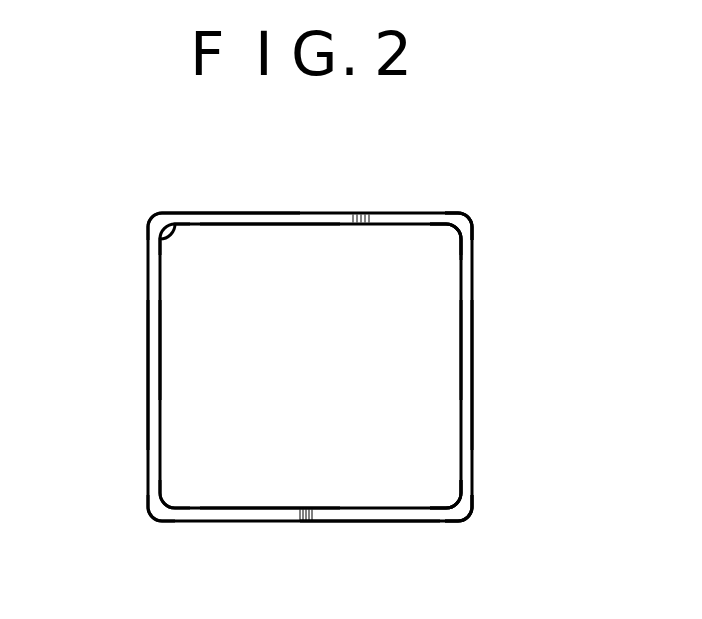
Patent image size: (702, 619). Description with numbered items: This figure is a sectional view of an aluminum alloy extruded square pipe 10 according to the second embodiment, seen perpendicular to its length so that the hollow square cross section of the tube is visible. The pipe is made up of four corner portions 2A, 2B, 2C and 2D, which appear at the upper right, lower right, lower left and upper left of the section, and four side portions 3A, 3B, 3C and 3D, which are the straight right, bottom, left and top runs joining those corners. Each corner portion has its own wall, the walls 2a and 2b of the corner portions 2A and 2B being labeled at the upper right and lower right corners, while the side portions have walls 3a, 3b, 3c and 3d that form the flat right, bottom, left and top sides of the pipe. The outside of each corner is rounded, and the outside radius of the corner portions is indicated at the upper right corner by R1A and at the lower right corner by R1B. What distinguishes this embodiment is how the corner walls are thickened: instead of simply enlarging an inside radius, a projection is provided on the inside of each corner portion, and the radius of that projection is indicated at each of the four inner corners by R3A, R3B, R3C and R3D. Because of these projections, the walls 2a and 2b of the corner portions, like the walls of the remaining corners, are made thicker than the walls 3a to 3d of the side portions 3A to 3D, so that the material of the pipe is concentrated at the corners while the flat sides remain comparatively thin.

The square pipe 10 is at (397, 162).
The corner portion 2A is at (491, 214).
The corner portion 2B is at (475, 533).
The corner portion 2C is at (150, 534).
The corner portion 2D is at (138, 208).
The wall of corner portion 2a is at (470, 246).
The wall of corner portion 2b is at (457, 509).
The side portion 3A is at (472, 400).
The side portion 3B is at (353, 522).
The side portion 3C is at (148, 399).
The side portion 3D is at (243, 212).
The wall of side portion 3a is at (462, 342).
The wall of side portion 3b is at (268, 509).
The wall of side portion 3c is at (160, 344).
The wall of side portion 3d is at (316, 218).
The outside radius of corner portion R1A is at (468, 213).
The outside radius of corner portion R1B is at (474, 512).
The radius of projection R3A is at (449, 234).
The radius of projection R3B is at (448, 501).
The radius of projection R3C is at (174, 501).
The radius of projection R3D is at (174, 232).